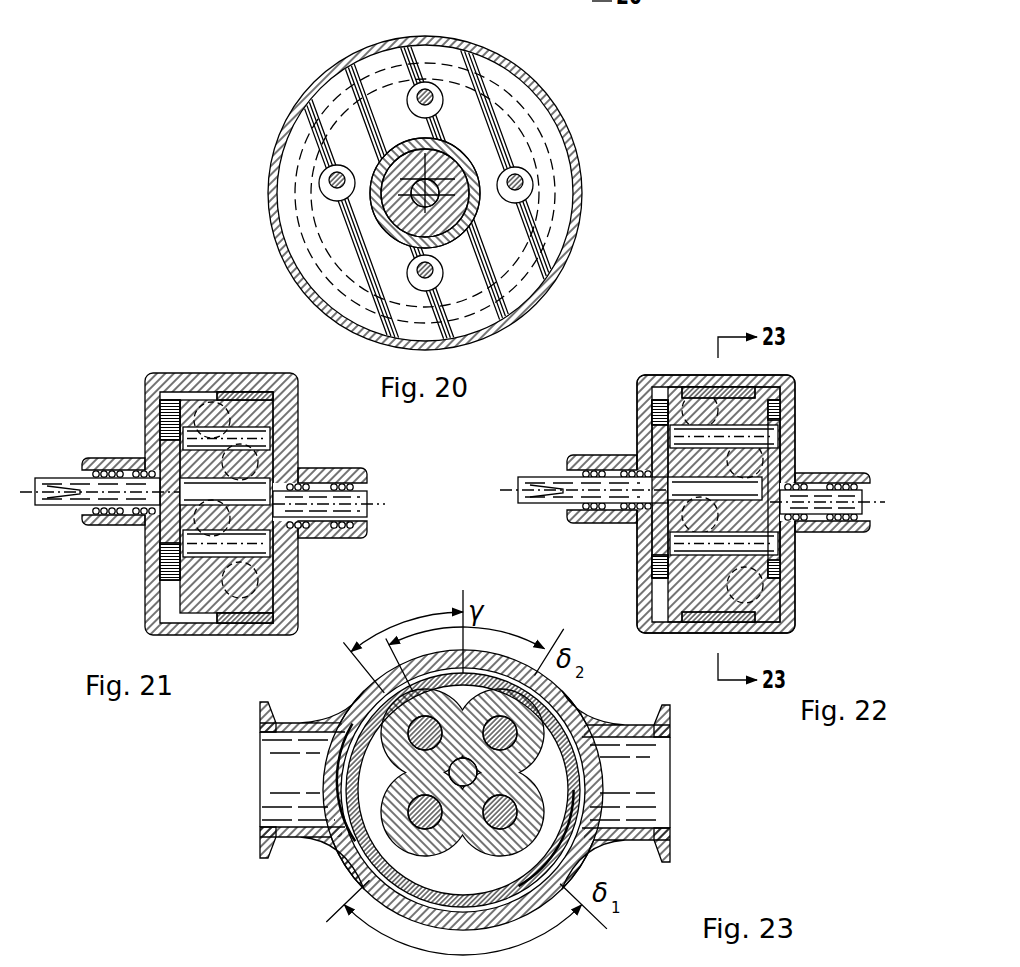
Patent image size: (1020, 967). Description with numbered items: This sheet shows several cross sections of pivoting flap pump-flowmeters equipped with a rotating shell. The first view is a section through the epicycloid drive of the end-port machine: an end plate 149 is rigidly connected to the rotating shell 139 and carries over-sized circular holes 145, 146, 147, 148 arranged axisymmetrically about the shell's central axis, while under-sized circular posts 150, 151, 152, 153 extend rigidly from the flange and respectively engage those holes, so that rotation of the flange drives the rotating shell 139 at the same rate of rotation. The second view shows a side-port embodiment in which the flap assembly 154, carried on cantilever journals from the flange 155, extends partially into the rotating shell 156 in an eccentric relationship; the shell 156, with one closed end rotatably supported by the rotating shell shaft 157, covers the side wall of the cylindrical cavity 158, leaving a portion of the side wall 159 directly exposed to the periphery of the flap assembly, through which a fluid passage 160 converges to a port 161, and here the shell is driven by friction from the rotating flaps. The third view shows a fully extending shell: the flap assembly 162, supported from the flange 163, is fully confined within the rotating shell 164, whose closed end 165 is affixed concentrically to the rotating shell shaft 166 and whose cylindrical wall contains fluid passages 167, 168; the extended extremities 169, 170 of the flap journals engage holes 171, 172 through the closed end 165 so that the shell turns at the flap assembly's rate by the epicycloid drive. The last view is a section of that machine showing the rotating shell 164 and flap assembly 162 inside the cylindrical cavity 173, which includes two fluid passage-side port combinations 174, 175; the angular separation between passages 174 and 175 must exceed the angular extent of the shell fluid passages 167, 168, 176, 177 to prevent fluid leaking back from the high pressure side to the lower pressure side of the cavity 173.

In FIG. 20, the rotating shell 139 is at (372, 50).
In FIG. 20, the over-sized circular hole 145 is at (445, 100).
In FIG. 20, the over-sized circular hole 146 is at (530, 192).
In FIG. 20, the over-sized circular hole 147 is at (410, 285).
In FIG. 20, the over-sized circular hole 148 is at (320, 185).
In FIG. 20, the end plate 149 is at (357, 110).
In FIG. 20, the under-sized circular post 150 is at (442, 83).
In FIG. 20, the under-sized circular post 151 is at (533, 183).
In FIG. 20, the under-sized circular post 152 is at (440, 290).
In FIG. 20, the under-sized circular post 153 is at (327, 195).
In FIG. 21, the flap assembly 154 is at (207, 597).
In FIG. 21, the flange 155 is at (148, 418).
In FIG. 21, the rotating shell 156 is at (250, 393).
In FIG. 21, the rotating shell shaft 157 is at (367, 507).
In FIG. 21, the cylindrical cavity 158 is at (217, 593).
In FIG. 21, the portion of the side wall 159 is at (188, 395).
In FIG. 21, the fluid passage 160 is at (153, 568).
In FIG. 21, the port 161 is at (260, 413).
In FIG. 22, the flap assembly 162 is at (672, 600).
In FIG. 23, the flap assembly 162 is at (333, 838).
In FIG. 22, the flange 163 is at (655, 568).
In FIG. 22, the rotating shell 164 is at (785, 635).
In FIG. 23, the rotating shell 164 is at (545, 700).
In FIG. 22, the closed end 165 is at (793, 400).
In FIG. 22, the rotating shell shaft 166 is at (822, 502).
In FIG. 22, the fluid passage 167 is at (710, 388).
In FIG. 23, the fluid passage 167 is at (423, 690).
In FIG. 22, the fluid passage 168 is at (730, 613).
In FIG. 23, the fluid passage 168 is at (537, 873).
In FIG. 22, the extended extremity of journal 169 is at (777, 413).
In FIG. 22, the extended extremity of journal 170 is at (762, 542).
In FIG. 22, the hole 171 is at (782, 435).
In FIG. 22, the hole 172 is at (780, 565).
In FIG. 23, the cylindrical cavity 173 is at (590, 858).
In FIG. 23, the fluid passage-side port combination 174 is at (335, 770).
In FIG. 23, the fluid passage-side port combination 175 is at (597, 783).
In FIG. 23, the fluid passage 176 is at (610, 752).
In FIG. 23, the fluid passage 177 is at (360, 830).